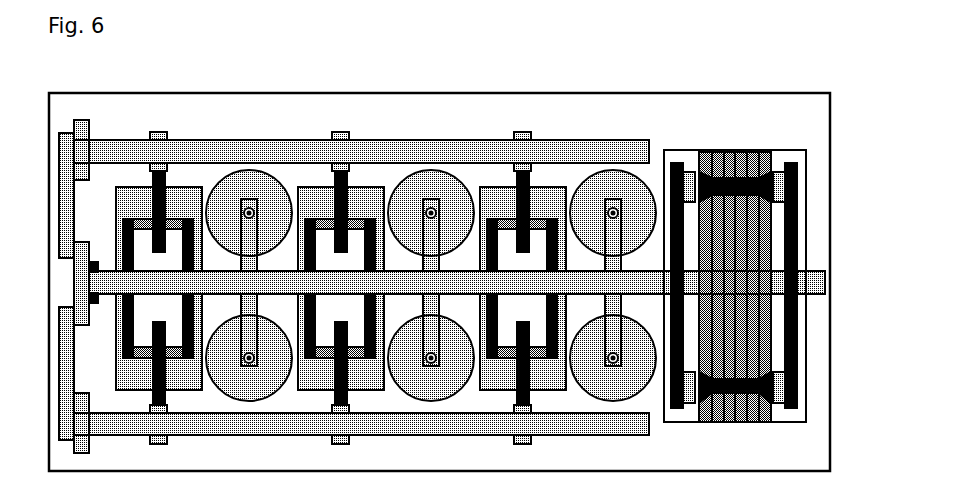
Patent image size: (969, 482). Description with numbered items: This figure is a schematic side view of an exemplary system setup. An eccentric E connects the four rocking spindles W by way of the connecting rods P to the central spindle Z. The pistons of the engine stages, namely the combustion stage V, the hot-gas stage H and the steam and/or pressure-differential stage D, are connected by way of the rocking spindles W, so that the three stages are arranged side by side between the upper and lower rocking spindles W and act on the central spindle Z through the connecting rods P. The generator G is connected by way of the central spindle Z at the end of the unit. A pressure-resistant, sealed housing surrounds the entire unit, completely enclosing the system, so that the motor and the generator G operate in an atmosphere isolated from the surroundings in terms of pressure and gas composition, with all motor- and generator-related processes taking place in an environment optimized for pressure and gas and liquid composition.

The eccentric E is at (74, 253).
The combustion stage V is at (165, 248).
The hot-gas stage H is at (350, 248).
The steam and/or pressure-differential stage D is at (531, 248).
The generator G is at (735, 237).
The rocking spindle W is at (330, 285).
The connecting rod P is at (335, 285).
The central spindle Z is at (420, 282).